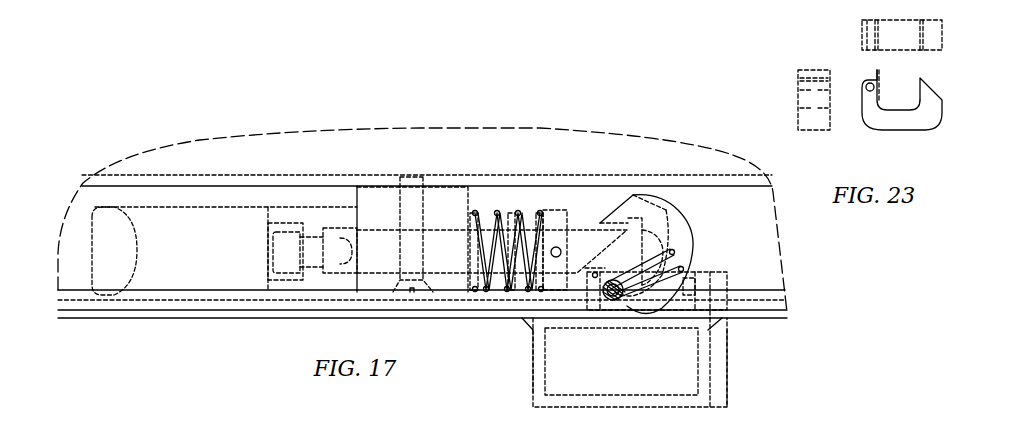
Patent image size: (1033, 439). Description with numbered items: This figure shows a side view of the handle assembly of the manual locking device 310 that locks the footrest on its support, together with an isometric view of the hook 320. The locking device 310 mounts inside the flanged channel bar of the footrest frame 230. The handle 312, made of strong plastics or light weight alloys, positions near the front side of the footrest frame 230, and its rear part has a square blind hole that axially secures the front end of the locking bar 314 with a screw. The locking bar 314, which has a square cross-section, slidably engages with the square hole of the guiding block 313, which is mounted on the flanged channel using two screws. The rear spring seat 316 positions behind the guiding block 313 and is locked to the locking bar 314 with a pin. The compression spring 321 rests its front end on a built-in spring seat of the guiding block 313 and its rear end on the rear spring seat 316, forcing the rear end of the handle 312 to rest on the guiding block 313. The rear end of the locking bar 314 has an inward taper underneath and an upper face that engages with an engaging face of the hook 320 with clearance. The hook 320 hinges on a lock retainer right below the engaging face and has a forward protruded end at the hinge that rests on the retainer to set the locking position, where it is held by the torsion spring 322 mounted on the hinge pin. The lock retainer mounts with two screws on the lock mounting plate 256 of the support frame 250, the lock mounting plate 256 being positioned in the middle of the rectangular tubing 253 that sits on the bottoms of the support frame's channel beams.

In FIG. 17, the footrest frame 230 is at (692, 155).
In FIG. 17, the support frame 250 is at (745, 353).
In FIG. 17, the rectangular tubing 253 is at (533, 362).
In FIG. 17, the lock mounting plate 256 is at (727, 382).
In FIG. 17, the locking device 310 is at (690, 243).
In FIG. 17, the handle 312 is at (195, 207).
In FIG. 17, the guiding block 313 is at (357, 192).
In FIG. 17, the locking bar 314 is at (378, 228).
In FIG. 17, the rear spring seat 316 is at (555, 212).
In FIG. 17, the hook 320 is at (635, 195).
In FIG. 23, the hook 320 is at (862, 32).
In FIG. 17, the compression spring 321 is at (497, 210).
In FIG. 17, the torsion spring 322 is at (681, 267).